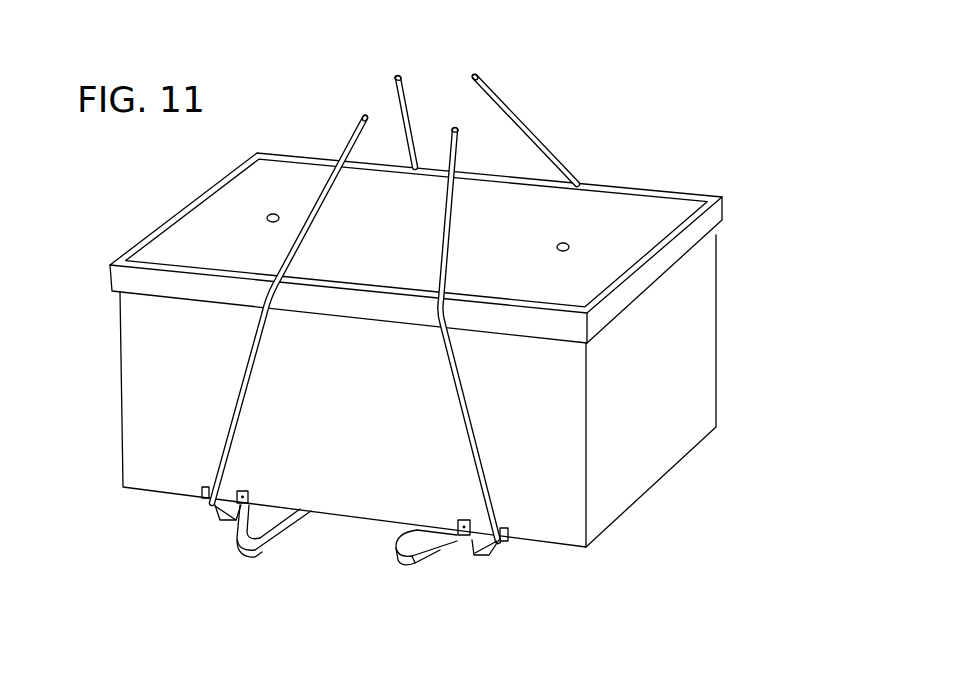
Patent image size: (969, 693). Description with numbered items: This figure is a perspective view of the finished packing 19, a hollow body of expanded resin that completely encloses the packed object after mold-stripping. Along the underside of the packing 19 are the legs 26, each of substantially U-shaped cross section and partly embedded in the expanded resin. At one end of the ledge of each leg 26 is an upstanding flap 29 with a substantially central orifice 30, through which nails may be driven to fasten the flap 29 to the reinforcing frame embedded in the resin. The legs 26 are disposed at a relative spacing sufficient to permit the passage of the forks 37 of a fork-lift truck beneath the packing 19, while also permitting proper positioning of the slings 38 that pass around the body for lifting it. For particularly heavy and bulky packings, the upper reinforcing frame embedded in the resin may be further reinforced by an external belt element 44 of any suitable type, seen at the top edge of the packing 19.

The packing 19 is at (675, 479).
The leg 26 is at (215, 510).
The upstanding flap 29 is at (243, 492).
The orifice 30 is at (462, 537).
The forks of a fork-lift truck 37 is at (273, 522).
The slings 38 is at (488, 92).
The external belt element 44 is at (720, 212).